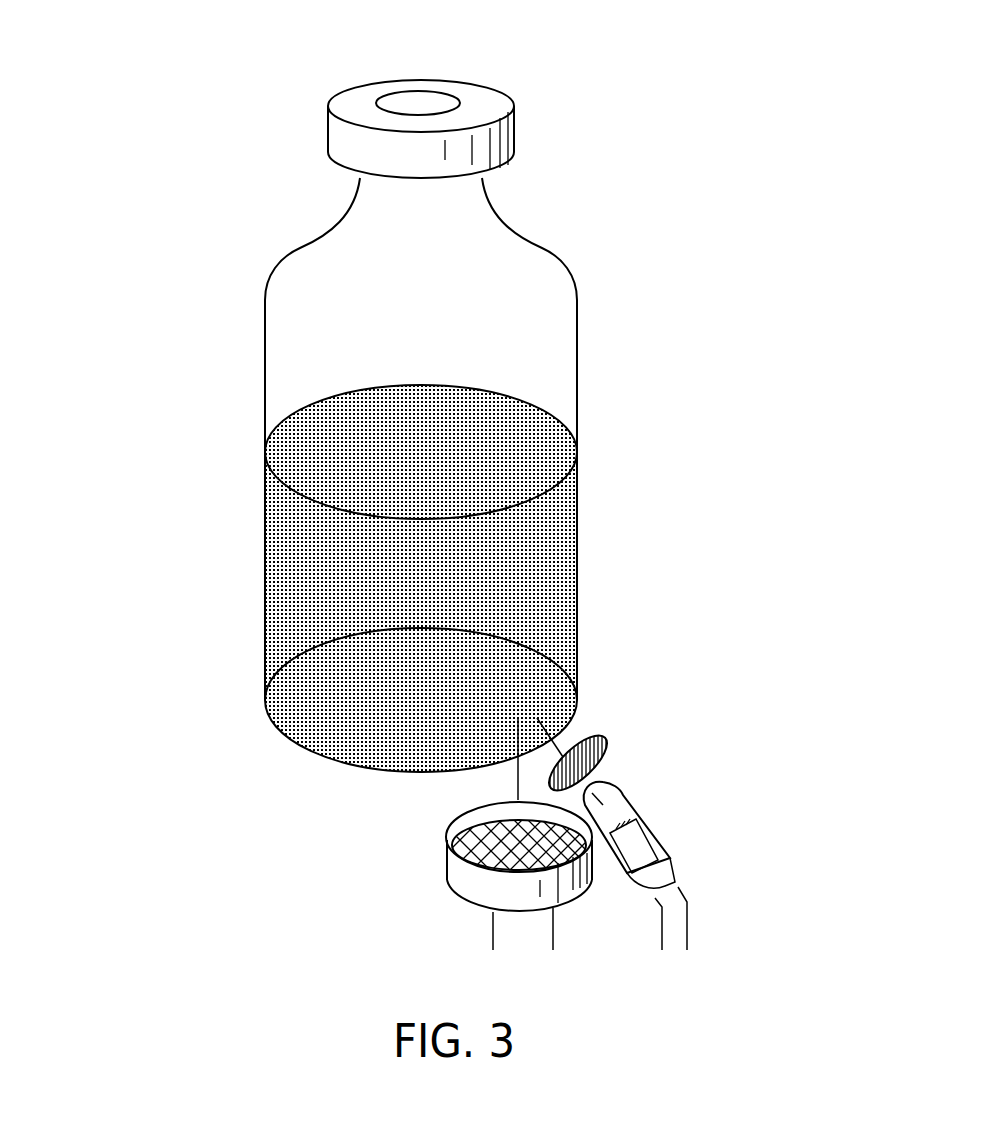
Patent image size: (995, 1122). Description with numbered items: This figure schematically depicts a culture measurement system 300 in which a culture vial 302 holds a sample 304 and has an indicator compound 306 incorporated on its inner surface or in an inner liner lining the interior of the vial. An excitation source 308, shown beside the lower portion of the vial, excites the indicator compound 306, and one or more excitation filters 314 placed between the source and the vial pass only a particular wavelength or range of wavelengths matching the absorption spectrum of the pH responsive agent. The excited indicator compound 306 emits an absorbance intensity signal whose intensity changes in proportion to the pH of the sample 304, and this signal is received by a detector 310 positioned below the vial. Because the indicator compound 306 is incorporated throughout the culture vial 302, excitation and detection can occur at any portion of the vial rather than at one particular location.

The culture measurement system 300 is at (191, 217).
The culture vial 302 is at (576, 289).
The sample 304 is at (545, 574).
The indicator compound 306 is at (276, 323).
The excitation source 308 is at (672, 858).
The detector 310 is at (465, 881).
The excitation filter 314 is at (606, 750).